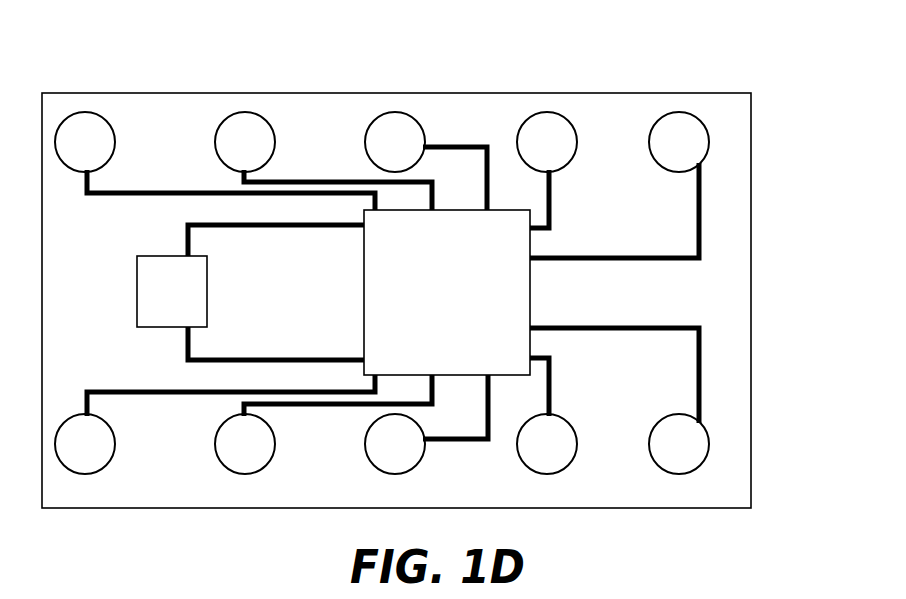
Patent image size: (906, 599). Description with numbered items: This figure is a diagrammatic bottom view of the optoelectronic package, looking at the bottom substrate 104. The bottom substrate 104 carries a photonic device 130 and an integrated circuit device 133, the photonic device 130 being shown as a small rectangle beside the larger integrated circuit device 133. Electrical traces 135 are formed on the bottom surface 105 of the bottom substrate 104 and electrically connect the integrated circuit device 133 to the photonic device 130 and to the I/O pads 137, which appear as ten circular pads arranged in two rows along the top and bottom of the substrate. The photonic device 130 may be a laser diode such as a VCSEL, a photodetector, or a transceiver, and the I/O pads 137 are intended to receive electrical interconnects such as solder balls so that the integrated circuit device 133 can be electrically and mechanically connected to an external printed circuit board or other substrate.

The bottom substrate 104 is at (308, 93).
The bottom surface 105 is at (630, 207).
The photonic device 130 is at (196, 301).
The integrated circuit device 133 is at (474, 301).
The electrical traces 135 is at (701, 380).
The I/O pads 137 is at (241, 467).